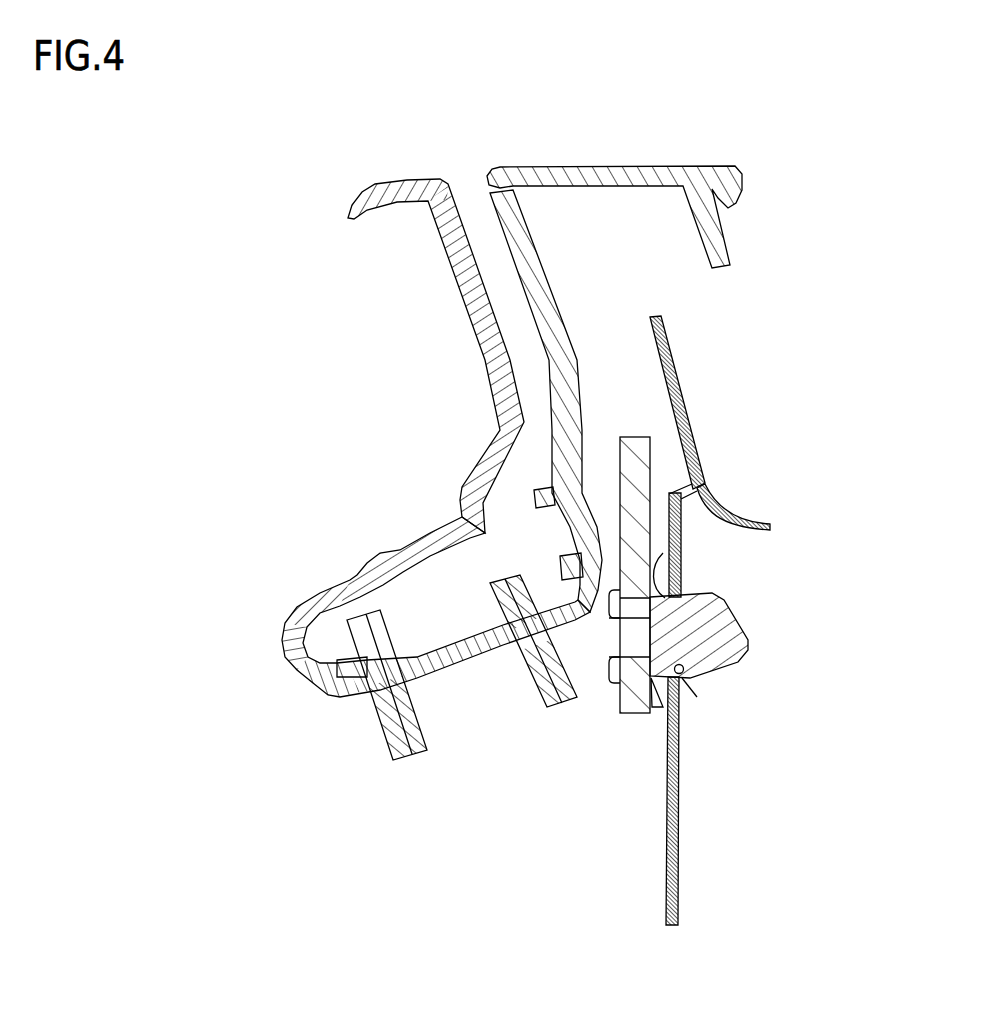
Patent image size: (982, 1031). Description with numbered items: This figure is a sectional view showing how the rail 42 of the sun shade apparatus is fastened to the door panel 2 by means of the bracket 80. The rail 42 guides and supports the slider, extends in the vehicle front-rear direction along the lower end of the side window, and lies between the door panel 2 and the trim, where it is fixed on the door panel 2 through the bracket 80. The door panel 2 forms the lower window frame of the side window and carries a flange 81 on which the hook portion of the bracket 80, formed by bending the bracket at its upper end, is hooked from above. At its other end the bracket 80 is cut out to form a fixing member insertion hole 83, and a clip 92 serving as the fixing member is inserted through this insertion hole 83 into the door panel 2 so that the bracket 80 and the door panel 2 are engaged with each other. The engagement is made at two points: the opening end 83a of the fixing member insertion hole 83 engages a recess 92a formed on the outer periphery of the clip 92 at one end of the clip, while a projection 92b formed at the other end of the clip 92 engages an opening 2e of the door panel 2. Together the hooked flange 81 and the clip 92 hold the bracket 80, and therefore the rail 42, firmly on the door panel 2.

The door panel 2 is at (757, 521).
The opening of the door panel 2e is at (690, 685).
The rail 42 is at (347, 583).
The bracket 80 is at (618, 462).
The flange of the door panel 81 is at (677, 363).
The fixing member insertion hole 83 is at (612, 667).
The opening end of the fixing member insertion hole 83a is at (650, 619).
The clip 92 is at (747, 637).
The recess of the clip 92a is at (654, 675).
The projection of the clip 92b is at (690, 683).